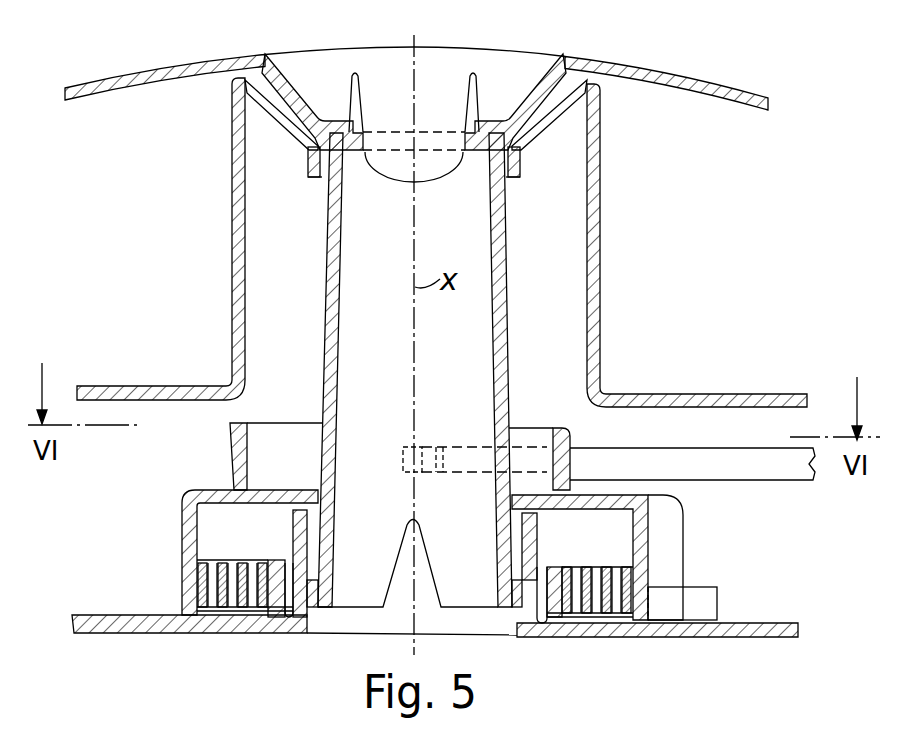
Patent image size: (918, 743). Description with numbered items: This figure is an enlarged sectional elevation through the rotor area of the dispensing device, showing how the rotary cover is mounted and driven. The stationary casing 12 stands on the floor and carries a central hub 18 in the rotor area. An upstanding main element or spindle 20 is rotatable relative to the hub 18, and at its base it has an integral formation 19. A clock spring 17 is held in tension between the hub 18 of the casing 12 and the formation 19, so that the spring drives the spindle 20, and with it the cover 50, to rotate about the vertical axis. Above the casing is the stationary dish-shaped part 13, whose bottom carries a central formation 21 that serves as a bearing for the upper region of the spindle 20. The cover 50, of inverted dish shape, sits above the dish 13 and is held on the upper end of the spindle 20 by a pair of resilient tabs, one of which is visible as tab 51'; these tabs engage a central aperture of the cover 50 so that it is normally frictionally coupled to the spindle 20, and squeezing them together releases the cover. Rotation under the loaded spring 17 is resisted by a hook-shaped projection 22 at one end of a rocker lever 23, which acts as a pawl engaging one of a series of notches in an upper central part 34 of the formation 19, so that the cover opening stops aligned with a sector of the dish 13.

The cover 50 is at (147, 68).
The resilient tab 51' is at (414, 96).
The central formation 21 is at (232, 283).
The dish-shaped part 13 is at (712, 394).
The spindle 20 is at (508, 357).
The upper central part 34 is at (230, 440).
The hook-shaped projection 22 is at (402, 466).
The rocker lever 23 is at (742, 480).
The formation 19 is at (182, 530).
The clock spring 17 is at (613, 567).
The hub 18 is at (533, 534).
The casing 12 is at (768, 637).